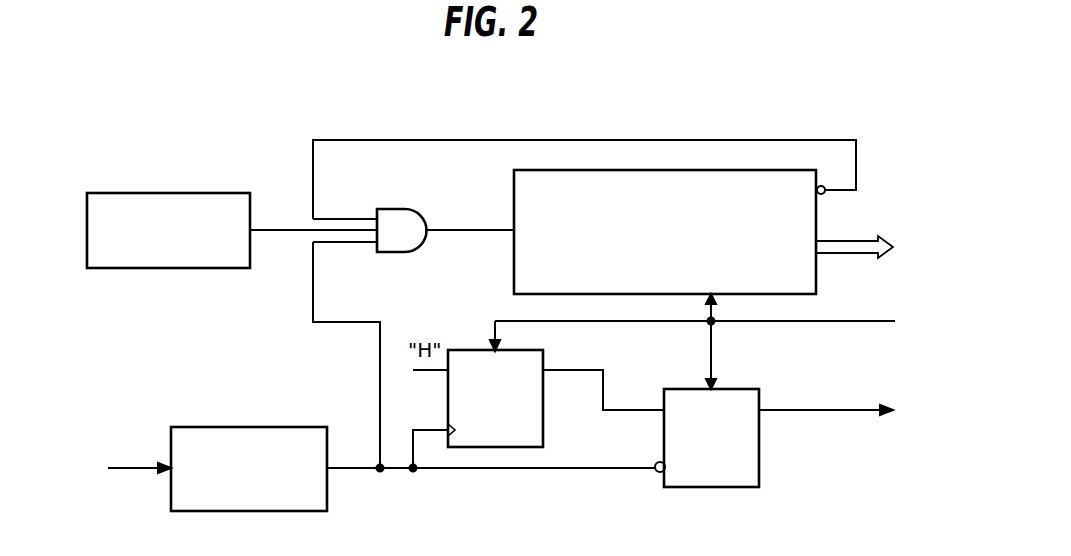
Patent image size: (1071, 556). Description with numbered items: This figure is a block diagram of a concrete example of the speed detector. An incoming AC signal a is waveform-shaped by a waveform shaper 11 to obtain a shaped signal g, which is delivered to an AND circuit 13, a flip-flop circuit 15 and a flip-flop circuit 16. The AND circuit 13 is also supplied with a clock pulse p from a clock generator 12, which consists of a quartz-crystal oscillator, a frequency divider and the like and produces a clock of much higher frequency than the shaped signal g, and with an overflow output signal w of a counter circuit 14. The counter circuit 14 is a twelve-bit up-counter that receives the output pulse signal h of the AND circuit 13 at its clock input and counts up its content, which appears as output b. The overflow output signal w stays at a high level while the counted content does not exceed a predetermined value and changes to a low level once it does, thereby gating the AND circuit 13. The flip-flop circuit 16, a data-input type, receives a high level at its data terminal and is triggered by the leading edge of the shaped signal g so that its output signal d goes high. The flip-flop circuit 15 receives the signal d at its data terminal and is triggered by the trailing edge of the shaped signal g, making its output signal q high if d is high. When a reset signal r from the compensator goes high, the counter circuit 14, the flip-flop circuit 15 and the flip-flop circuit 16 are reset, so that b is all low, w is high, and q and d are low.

The waveform shaper 11 is at (283, 427).
The clock generator 12 is at (206, 193).
The AND circuit 13 is at (403, 208).
The counter circuit 14 is at (514, 265).
The flip-flop circuit 15 is at (759, 470).
The flip-flop circuit 16 is at (543, 428).
The AC signal a is at (130, 468).
The counter content output b is at (848, 241).
The output signal d is at (620, 406).
The shaped signal g is at (349, 470).
The output pulse signal h is at (458, 230).
The clock pulse p is at (264, 232).
The output signal q is at (815, 412).
The reset signal r is at (847, 321).
The overflow output signal w is at (544, 140).